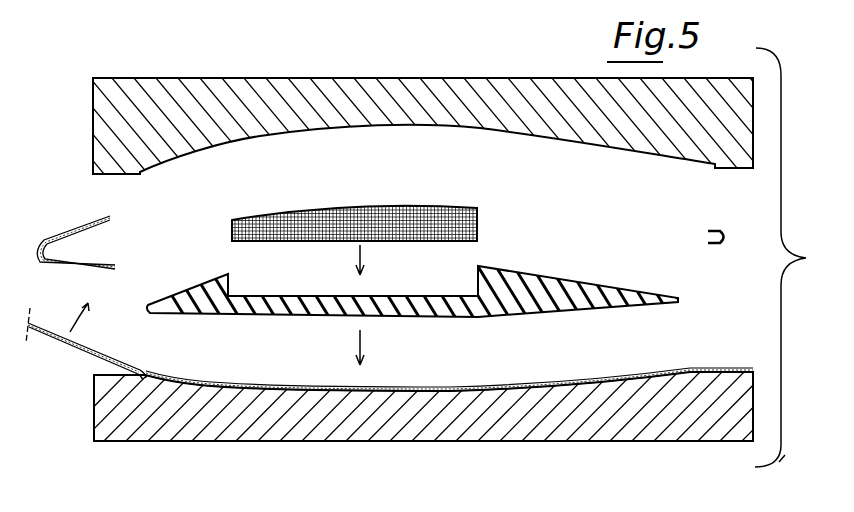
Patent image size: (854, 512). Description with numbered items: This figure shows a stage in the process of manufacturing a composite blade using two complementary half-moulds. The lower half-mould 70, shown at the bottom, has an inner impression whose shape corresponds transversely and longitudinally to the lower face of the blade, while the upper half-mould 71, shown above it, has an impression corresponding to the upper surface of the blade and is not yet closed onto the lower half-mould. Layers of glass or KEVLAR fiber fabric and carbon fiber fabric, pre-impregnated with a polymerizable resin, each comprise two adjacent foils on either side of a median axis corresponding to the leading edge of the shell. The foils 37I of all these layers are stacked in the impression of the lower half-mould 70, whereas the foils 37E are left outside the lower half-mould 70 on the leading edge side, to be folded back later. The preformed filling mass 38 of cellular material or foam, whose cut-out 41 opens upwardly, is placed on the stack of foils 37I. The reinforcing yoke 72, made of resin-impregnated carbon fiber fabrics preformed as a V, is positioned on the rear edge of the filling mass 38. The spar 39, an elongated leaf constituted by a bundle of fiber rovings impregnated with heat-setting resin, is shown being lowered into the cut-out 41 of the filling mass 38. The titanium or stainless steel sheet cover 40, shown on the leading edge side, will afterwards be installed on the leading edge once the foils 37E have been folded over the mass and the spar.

The upper half-mould 71 is at (180, 100).
The lower half-mould 70 is at (403, 420).
The spar 39 is at (328, 217).
The cut-out 41 is at (306, 296).
The filling mass 38 is at (550, 285).
The leading edge cover 40 is at (70, 230).
The reinforcing yoke 72 is at (712, 232).
The upper surface foils 37E is at (50, 332).
The lower surface foils 37I is at (452, 388).